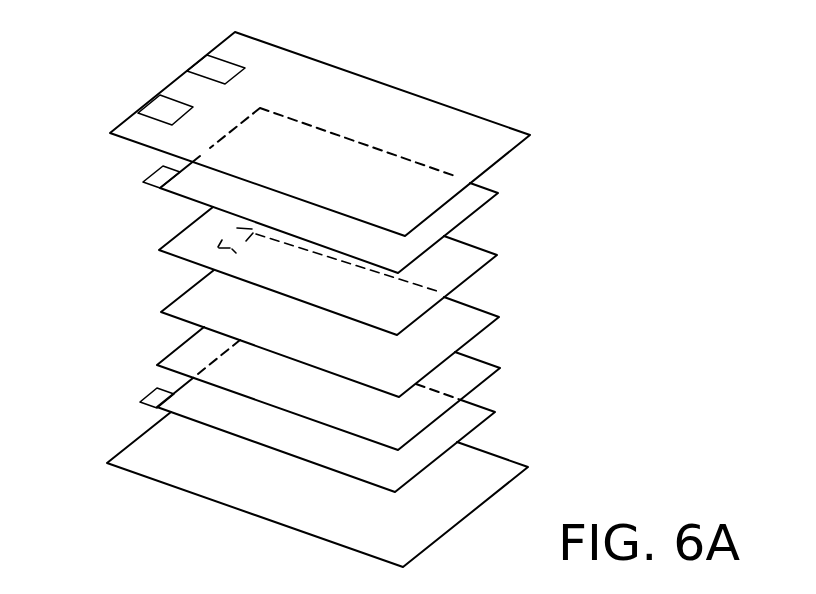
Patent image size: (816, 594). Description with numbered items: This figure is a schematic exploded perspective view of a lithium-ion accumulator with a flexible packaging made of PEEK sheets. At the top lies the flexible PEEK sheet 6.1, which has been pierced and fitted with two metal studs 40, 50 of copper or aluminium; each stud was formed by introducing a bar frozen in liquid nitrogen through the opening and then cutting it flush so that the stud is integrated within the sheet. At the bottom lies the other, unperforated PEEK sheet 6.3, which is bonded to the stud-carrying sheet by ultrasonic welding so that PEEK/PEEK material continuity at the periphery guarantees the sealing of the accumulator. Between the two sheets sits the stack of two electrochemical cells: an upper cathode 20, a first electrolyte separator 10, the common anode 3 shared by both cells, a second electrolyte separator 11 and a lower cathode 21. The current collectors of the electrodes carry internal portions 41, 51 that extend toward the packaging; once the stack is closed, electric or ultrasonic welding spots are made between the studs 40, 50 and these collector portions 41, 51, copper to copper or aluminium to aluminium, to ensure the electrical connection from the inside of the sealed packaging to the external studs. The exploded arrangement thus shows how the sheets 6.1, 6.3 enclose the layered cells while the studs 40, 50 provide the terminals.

The flexible PEEK sheet 6.1 is at (503, 137).
The unperforated PEEK sheet 6.3 is at (507, 465).
The metal stud 50 is at (213, 70).
The metal stud 40 is at (160, 108).
The current collector portion 41 is at (165, 176).
The cathode 20 is at (478, 197).
The electrolyte separator 10 is at (478, 253).
The current collector portion 51 is at (237, 238).
The common anode 3 is at (473, 315).
The electrolyte separator 11 is at (478, 368).
The cathode 21 is at (478, 413).